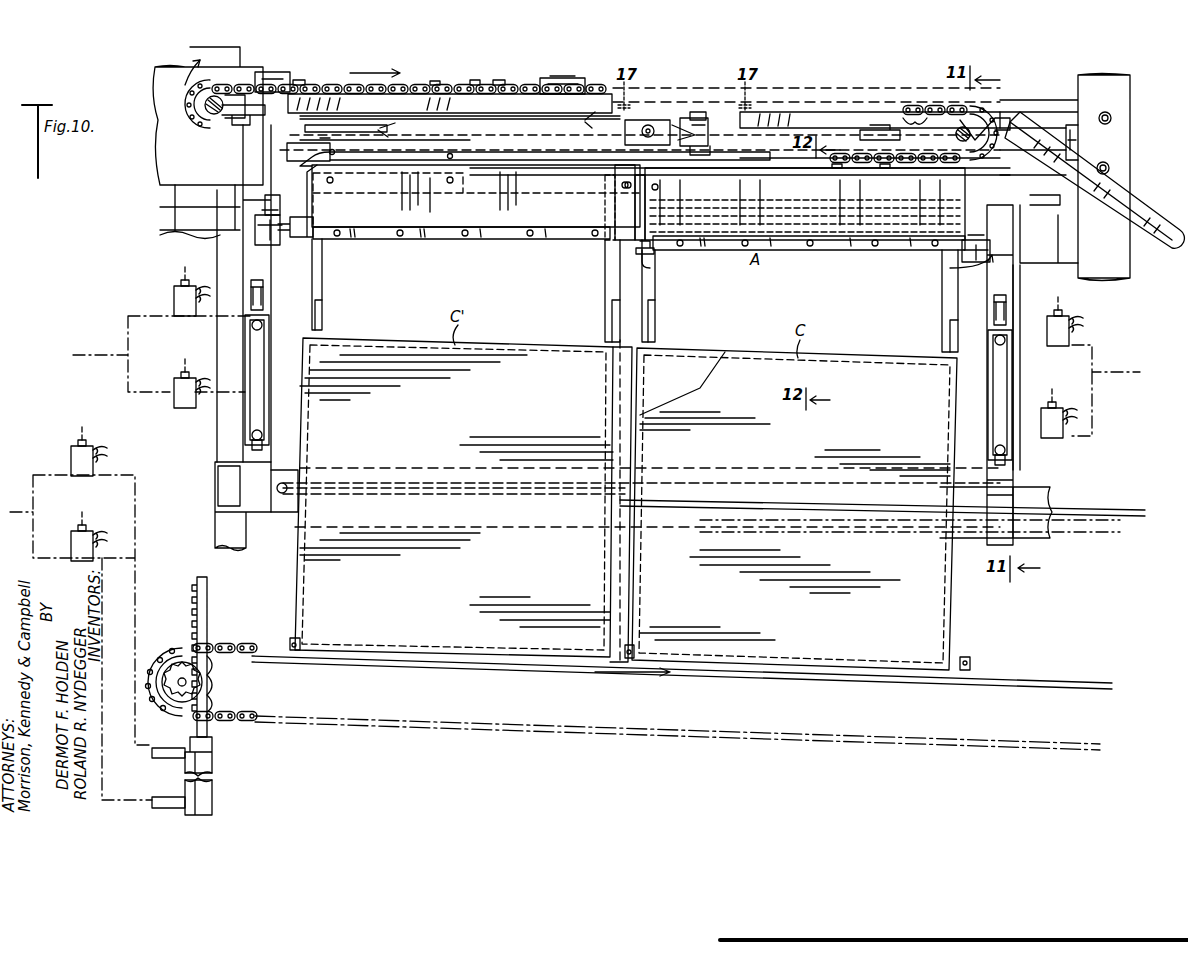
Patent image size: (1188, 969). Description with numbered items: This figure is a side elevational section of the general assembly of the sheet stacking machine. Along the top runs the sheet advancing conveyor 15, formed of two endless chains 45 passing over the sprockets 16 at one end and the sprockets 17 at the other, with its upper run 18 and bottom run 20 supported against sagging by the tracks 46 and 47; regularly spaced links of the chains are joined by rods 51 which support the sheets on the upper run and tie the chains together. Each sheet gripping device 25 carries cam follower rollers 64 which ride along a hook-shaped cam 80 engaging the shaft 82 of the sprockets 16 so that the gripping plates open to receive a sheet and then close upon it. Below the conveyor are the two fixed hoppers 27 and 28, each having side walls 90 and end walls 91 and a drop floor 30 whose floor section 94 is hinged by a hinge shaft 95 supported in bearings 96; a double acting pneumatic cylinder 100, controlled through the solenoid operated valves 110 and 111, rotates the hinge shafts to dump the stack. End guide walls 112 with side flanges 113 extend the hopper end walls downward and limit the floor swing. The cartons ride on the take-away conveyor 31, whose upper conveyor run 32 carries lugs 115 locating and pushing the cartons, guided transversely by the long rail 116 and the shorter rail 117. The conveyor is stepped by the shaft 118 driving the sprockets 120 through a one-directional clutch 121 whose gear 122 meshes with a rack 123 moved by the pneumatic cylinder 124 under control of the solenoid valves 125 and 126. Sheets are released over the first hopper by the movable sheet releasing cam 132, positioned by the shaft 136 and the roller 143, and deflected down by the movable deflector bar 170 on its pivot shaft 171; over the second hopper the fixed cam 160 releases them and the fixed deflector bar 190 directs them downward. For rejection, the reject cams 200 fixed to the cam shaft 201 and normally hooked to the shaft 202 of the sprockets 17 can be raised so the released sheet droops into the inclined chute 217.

The sheet advancing conveyor 15 is at (429, 81).
The sprockets 16 is at (195, 118).
The sprockets 17 is at (965, 125).
The upper conveyor run 18 is at (480, 82).
The bottom conveyor run 20 is at (838, 155).
The sheet gripping device 25 is at (267, 65).
The hopper 27 is at (922, 234).
The hopper 28 is at (567, 216).
The drop floor 30 is at (487, 245).
The take-away conveyor 31 is at (440, 730).
The upper conveyor run 32 is at (545, 665).
The endless chains 45 is at (440, 82).
The track 46 is at (308, 93).
The track 47 is at (288, 152).
The rods 51 is at (299, 80).
The cam follower rollers 64 is at (392, 130).
The cam 80 is at (206, 105).
The shaft 82 is at (215, 135).
The side walls 90 is at (440, 205).
The end walls 91 is at (620, 210).
The floor section 94 is at (378, 240).
The hinge shaft 95 is at (312, 226).
The bearings 96 is at (272, 248).
The double acting pneumatic cylinder 100 is at (253, 340).
The solenoid operated valve 110 is at (174, 290).
The solenoid operated valve 111 is at (180, 406).
The end guide walls 112 is at (322, 310).
The side flanges 113 is at (322, 280).
The lugs 115 is at (300, 642).
The rail 116 is at (390, 490).
The rail 117 is at (1115, 500).
The shaft 118 is at (190, 684).
The sprockets 120 is at (215, 678).
The one-directional clutch 121 is at (182, 645).
The gear 122 is at (160, 708).
The rack 123 is at (208, 630).
The pneumatic cylinder 124 is at (213, 765).
The solenoid valve 125 is at (70, 455).
The solenoid valve 126 is at (70, 542).
The sheet releasing cam 132 is at (690, 118).
The shaft 136 is at (625, 130).
The roller 143 is at (672, 128).
The fixed cam 160 is at (362, 184).
The movable deflector bar 170 is at (775, 165).
The pivot shaft 171 is at (620, 185).
The fixed deflector bar 190 is at (462, 154).
The reject cams 200 is at (910, 108).
The cam shaft 201 is at (878, 140).
The shaft 202 is at (955, 142).
The inclined chute 217 is at (1140, 215).